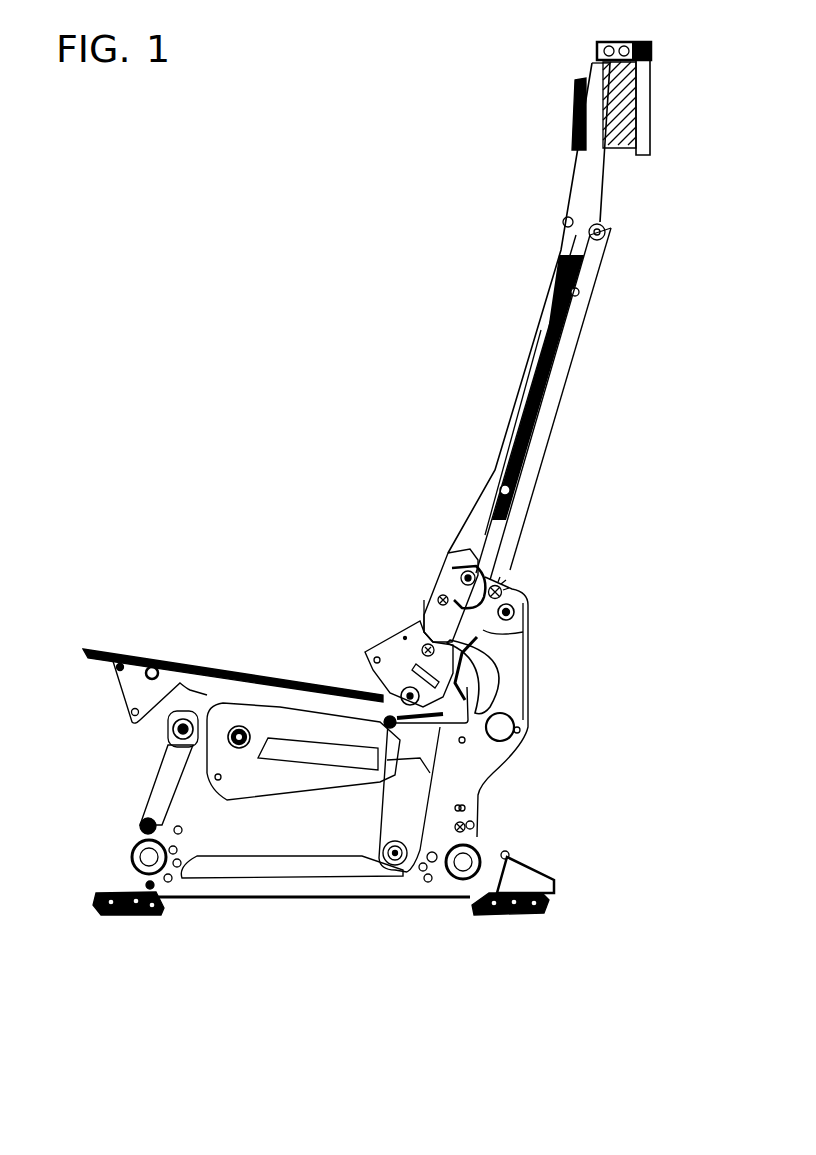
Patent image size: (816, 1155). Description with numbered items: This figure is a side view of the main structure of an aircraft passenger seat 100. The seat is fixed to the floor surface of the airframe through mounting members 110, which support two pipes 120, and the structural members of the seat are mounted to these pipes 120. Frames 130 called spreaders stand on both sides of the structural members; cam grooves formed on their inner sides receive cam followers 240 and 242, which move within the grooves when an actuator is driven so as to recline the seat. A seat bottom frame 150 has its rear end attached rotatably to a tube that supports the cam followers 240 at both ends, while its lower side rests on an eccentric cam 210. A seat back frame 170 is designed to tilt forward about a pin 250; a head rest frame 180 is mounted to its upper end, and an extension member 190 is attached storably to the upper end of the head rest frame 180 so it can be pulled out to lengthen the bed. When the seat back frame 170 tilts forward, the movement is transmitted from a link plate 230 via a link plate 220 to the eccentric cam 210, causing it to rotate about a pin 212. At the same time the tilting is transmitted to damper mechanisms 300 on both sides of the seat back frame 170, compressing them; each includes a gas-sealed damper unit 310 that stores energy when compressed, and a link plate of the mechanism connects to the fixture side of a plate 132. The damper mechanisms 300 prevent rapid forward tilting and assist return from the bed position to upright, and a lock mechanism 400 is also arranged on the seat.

The aircraft passenger seat 100 is at (253, 438).
The mounting members 110 is at (143, 916).
The pipes 120 is at (146, 855).
The frames 130 is at (463, 777).
The plate 132 is at (423, 620).
The seat bottom frame 150 is at (150, 655).
The seat back frame 170 is at (505, 425).
The head rest frame 180 is at (580, 186).
The extension member 190 is at (647, 120).
The eccentric cam 210 is at (216, 749).
The pin 212 is at (239, 724).
The link plate 220 is at (299, 787).
The link plate 230 is at (498, 674).
The cam followers 240 is at (391, 697).
The cam followers 242 is at (517, 598).
The pin 250 is at (431, 615).
The damper mechanisms 300 is at (550, 446).
The damper unit 310 is at (520, 440).
The lock mechanism 400 is at (506, 588).